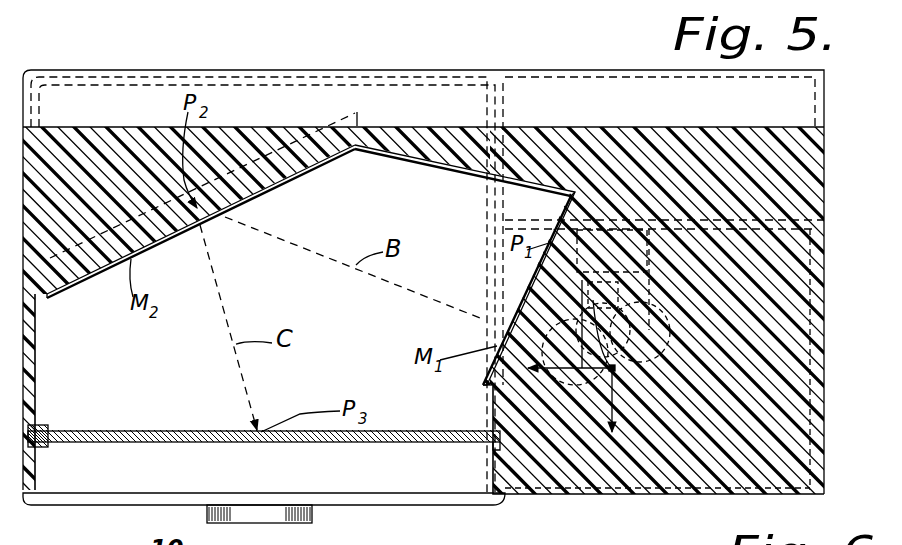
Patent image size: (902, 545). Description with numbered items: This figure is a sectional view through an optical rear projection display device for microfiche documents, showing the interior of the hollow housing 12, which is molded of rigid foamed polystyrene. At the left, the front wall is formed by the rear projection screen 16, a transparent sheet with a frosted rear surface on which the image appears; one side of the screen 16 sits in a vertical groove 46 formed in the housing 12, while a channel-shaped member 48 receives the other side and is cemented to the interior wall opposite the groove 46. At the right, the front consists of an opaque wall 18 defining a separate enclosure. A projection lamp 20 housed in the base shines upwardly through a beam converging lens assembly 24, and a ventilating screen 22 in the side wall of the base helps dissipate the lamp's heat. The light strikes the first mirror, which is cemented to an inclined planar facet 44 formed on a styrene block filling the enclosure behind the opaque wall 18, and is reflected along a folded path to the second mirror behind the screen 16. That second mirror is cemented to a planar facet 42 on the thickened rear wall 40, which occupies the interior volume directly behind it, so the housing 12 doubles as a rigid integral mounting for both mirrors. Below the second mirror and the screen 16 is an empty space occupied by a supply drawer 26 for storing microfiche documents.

The housing 12 is at (581, 60).
The rear projection screen 16 is at (162, 444).
The opaque wall 18 is at (578, 494).
The projection lamp 20 is at (645, 325).
The ventilating screen 22 is at (812, 380).
The beam converging lens assembly 24 is at (658, 498).
The supply drawer 26 is at (398, 500).
The rear wall 40 is at (292, 95).
The planar front surface or facet 42 is at (284, 185).
The planar surface or facet 44 is at (524, 289).
The vertical groove 46 is at (487, 455).
The channel-shaped member 48 is at (44, 426).